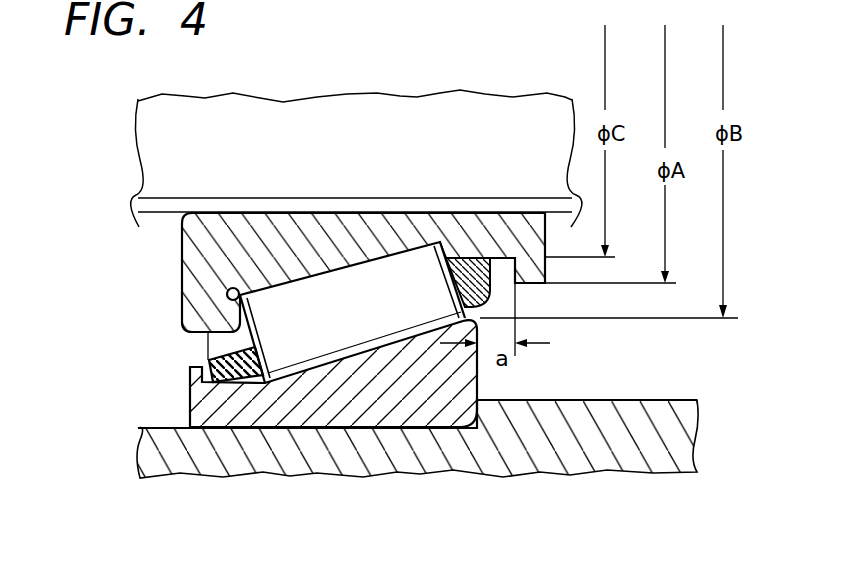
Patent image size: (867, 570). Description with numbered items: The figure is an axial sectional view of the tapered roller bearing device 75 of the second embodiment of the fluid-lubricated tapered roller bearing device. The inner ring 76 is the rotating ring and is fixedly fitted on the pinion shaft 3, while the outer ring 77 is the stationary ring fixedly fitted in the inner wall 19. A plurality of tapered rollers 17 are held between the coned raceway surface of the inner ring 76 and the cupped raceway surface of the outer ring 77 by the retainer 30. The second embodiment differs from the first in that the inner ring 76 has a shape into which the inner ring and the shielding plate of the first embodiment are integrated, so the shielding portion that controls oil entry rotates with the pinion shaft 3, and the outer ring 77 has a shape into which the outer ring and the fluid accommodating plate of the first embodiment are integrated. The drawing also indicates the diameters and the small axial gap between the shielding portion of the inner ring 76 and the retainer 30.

The pinion shaft 3 is at (315, 118).
The tapered roller bearing device 75 is at (151, 296).
The inner ring 76 is at (208, 253).
The tapered rollers 17 is at (312, 343).
The retainer 30 is at (207, 348).
The outer ring 77 is at (387, 395).
The inner wall 19 is at (575, 448).